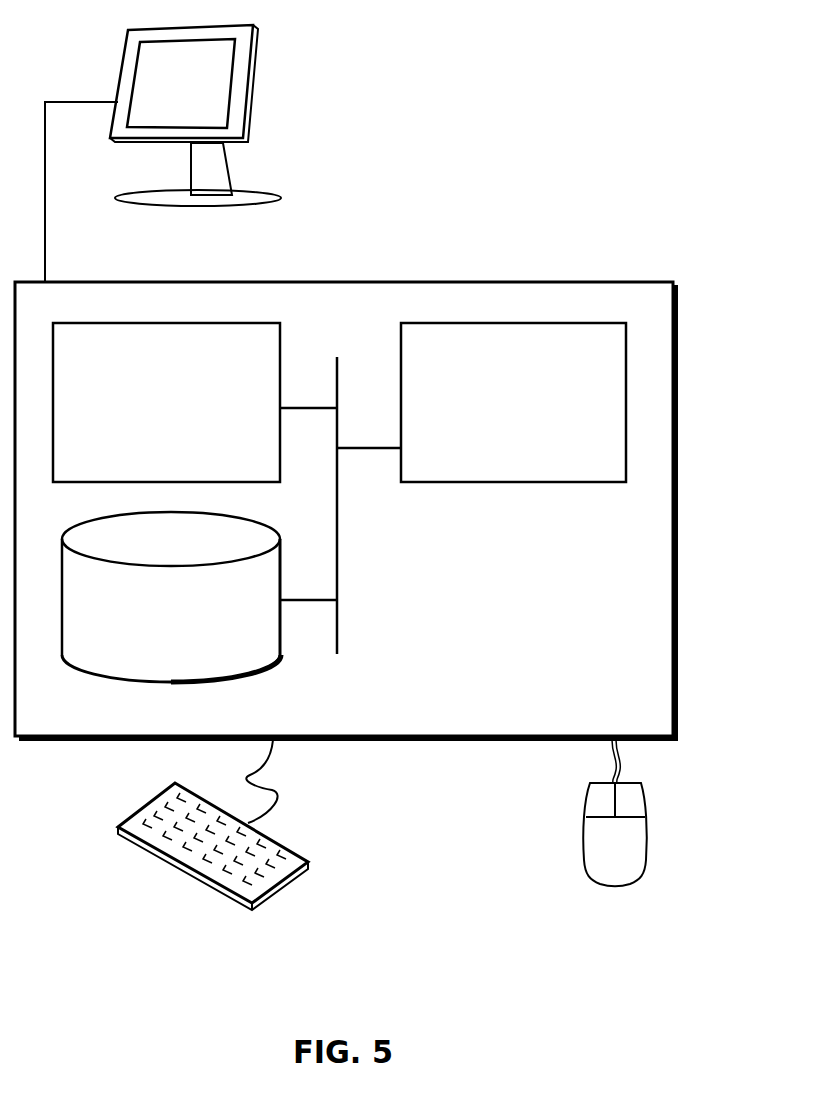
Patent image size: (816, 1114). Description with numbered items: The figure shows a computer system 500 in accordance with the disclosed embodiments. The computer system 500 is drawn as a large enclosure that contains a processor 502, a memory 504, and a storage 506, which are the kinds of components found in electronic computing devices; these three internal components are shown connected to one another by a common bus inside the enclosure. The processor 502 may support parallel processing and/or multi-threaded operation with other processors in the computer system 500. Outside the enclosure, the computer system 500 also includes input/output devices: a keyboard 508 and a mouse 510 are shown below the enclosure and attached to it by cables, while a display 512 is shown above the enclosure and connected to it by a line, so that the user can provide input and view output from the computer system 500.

The computer system 500 is at (390, 258).
The processor 502 is at (540, 417).
The memory 504 is at (190, 415).
The storage 506 is at (196, 625).
The keyboard 508 is at (138, 850).
The mouse 510 is at (637, 857).
The display 512 is at (163, 153).